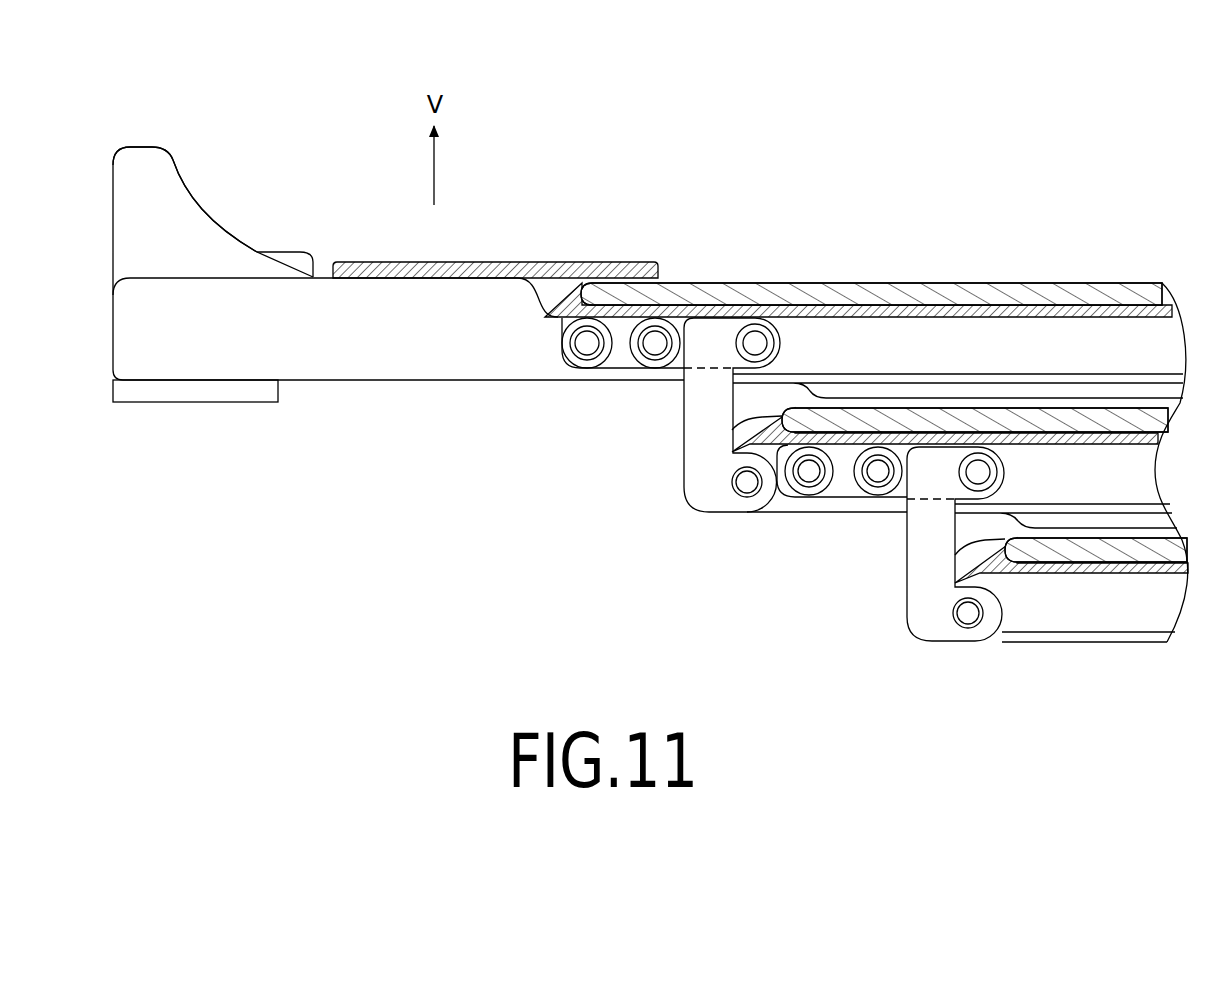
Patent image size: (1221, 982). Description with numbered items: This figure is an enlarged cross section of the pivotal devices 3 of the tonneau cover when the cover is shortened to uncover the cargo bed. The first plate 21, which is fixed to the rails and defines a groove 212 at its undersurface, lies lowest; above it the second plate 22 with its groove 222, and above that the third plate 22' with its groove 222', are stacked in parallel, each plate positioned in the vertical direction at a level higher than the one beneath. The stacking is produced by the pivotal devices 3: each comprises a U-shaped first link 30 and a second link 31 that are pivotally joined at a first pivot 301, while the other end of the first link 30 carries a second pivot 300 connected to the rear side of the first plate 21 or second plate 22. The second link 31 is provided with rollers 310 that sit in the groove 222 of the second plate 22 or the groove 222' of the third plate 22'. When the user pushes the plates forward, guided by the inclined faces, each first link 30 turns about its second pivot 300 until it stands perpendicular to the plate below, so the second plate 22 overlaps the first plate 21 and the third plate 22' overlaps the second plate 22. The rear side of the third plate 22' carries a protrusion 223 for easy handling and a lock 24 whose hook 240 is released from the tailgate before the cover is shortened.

The protrusion 223 is at (143, 168).
The lock 24 is at (280, 250).
The hook 240 is at (210, 402).
The third plate 22' is at (858, 254).
The groove 222' is at (958, 294).
The second plate 22 is at (950, 321).
The groove 222 is at (1066, 605).
The first plate 21 is at (1139, 553).
The groove 212 is at (1087, 612).
The pivotal device 3 is at (670, 450).
The first link 30 is at (707, 495).
The second link 31 is at (622, 332).
The rollers 310 is at (578, 328).
The first pivot 301 is at (758, 336).
The second pivot 300 is at (748, 488).